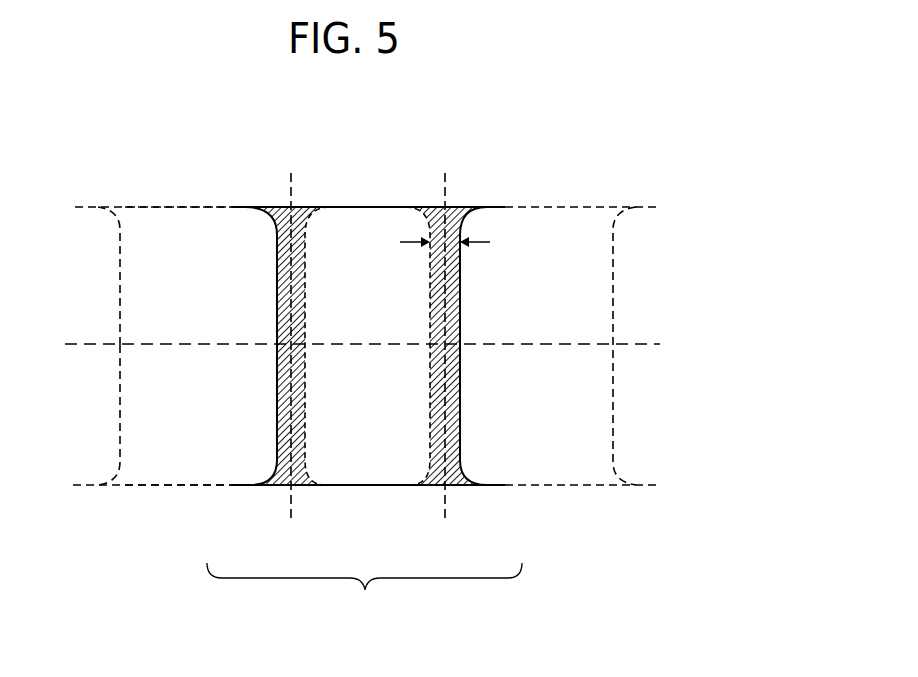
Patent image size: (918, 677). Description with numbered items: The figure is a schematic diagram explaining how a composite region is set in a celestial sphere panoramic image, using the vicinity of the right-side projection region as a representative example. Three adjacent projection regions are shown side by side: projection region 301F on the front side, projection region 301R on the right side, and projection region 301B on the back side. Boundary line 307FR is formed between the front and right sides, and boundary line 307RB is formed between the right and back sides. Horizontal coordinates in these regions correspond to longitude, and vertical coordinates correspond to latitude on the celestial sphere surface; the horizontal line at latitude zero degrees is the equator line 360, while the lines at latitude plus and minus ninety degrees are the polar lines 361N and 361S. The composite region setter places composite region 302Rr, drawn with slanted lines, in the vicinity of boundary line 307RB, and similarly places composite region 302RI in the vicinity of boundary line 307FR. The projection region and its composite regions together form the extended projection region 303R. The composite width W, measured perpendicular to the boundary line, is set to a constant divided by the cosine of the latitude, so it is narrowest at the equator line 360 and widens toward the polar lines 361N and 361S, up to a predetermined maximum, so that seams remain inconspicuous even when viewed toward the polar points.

The equator line 360 is at (72, 343).
The polar line 361N is at (128, 207).
The polar line 361S is at (120, 487).
The projection region 301F is at (143, 472).
The projection region 301R is at (355, 488).
The projection region 301B is at (572, 472).
The composite region 302RI is at (277, 487).
The composite region 302Rr is at (455, 487).
The extended projection region 303R is at (364, 418).
The boundary line 307FR is at (290, 175).
The boundary line 307RB is at (445, 175).
The composite width W is at (450, 258).